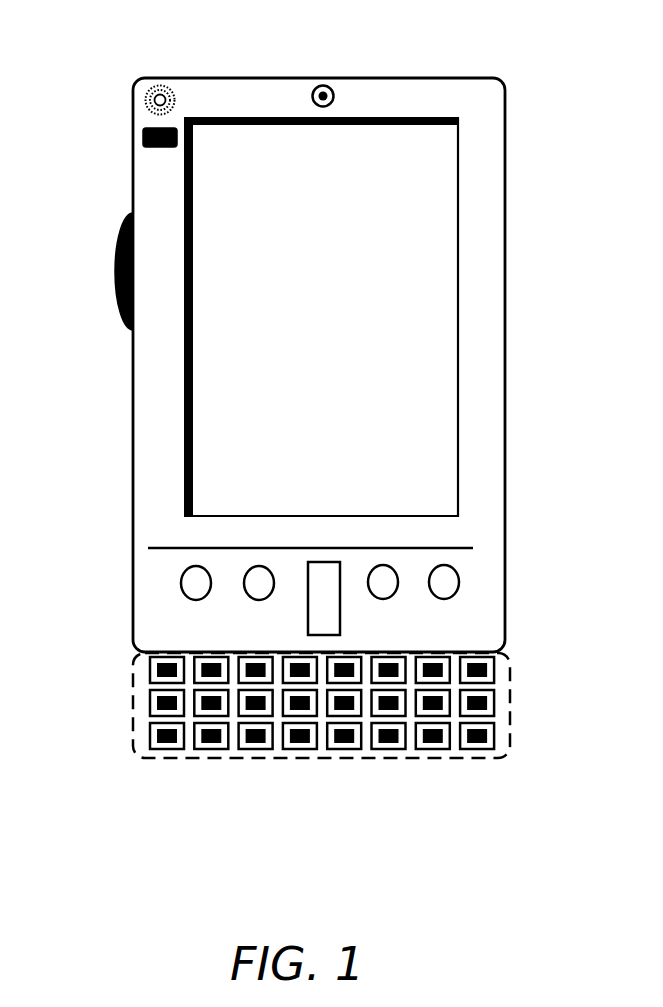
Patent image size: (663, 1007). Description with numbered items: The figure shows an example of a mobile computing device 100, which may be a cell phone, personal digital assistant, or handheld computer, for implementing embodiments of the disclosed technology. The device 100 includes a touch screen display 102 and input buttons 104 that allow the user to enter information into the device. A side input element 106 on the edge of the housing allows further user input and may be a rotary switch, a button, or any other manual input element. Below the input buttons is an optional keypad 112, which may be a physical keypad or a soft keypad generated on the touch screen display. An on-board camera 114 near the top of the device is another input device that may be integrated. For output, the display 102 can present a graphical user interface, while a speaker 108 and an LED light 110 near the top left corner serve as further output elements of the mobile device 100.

The mobile computing device 100 is at (505, 92).
The touch screen display 102 is at (210, 460).
The input buttons 104 is at (442, 593).
The side input element 106 is at (116, 250).
The speaker 108 is at (146, 97).
The LED light 110 is at (143, 137).
The keypad 112 is at (133, 730).
The on-board camera 114 is at (333, 89).